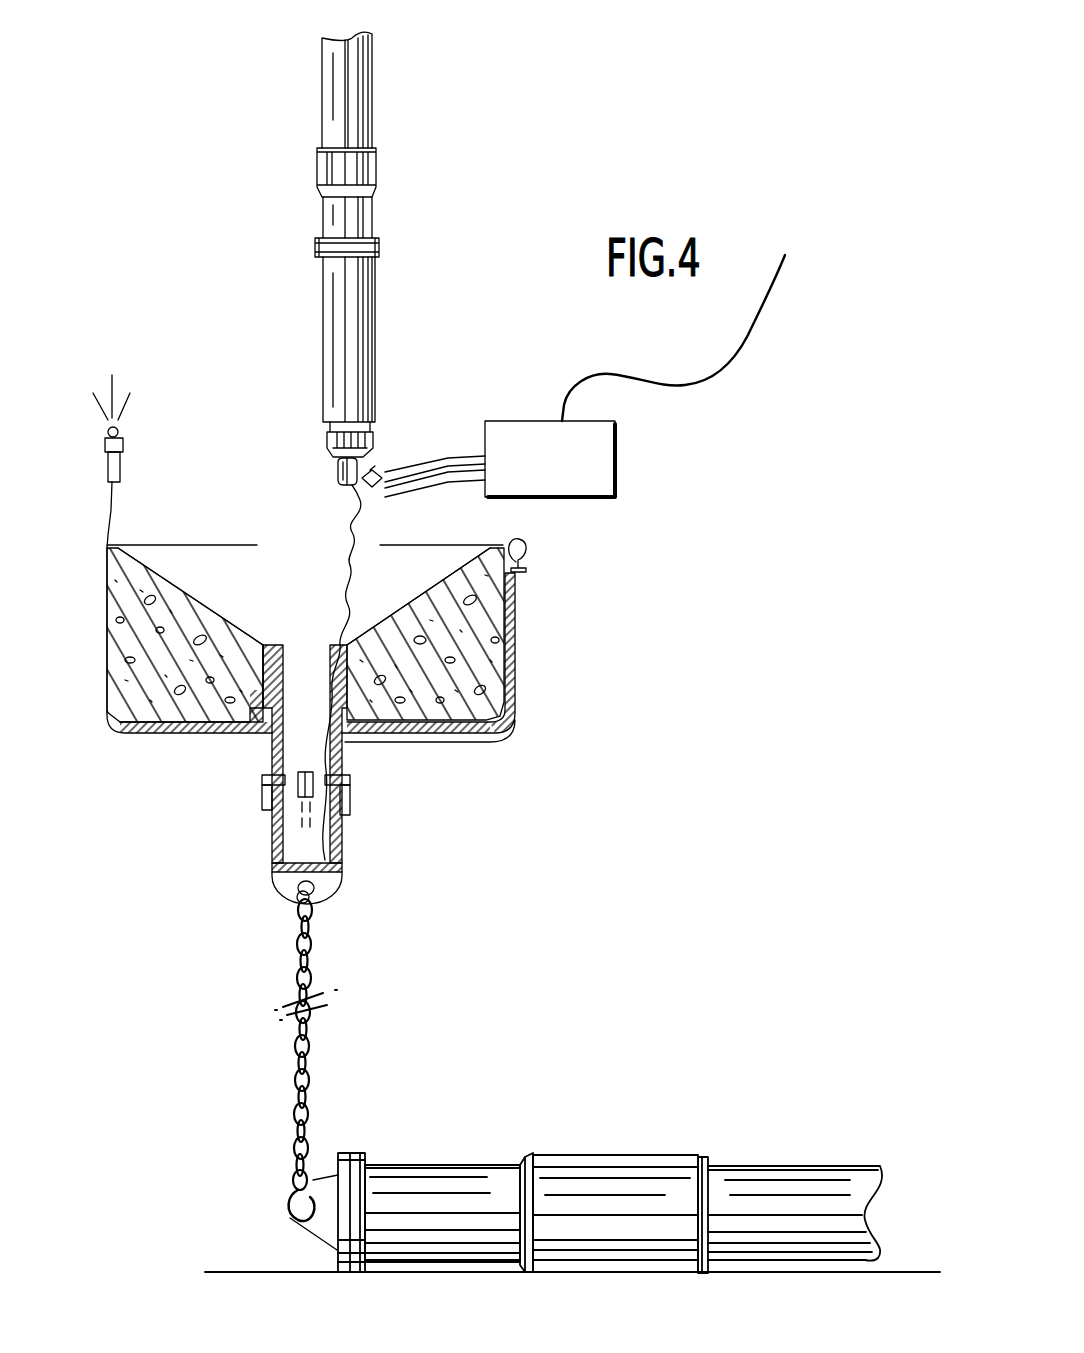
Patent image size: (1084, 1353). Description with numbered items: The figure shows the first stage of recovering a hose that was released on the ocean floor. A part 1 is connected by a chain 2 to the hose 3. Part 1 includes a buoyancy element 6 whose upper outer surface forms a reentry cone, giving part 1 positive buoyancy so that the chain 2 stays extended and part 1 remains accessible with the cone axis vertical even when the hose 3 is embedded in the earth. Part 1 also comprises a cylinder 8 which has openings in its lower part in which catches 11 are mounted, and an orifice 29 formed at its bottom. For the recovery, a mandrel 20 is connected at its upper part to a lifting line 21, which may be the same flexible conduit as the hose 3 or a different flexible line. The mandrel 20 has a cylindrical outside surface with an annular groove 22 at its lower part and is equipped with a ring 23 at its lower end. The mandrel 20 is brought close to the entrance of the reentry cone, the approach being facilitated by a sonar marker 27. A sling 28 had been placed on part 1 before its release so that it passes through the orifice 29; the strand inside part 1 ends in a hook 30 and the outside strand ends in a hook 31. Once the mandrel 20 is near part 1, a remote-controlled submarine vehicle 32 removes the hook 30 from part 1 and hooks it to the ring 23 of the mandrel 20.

The part 1 is at (351, 726).
The chain 2 is at (296, 1075).
The hose 3 is at (733, 1200).
The buoyancy element 6 is at (162, 735).
The cylinder 8 is at (338, 838).
The catches 11 is at (262, 786).
The mandrel 20 is at (353, 320).
The lifting line 21 is at (335, 120).
The annular groove 22 is at (372, 430).
The ring 23 is at (340, 472).
The sonar marker 27 is at (115, 468).
The sling 28 is at (350, 592).
The orifice 29 is at (312, 850).
The hook 30 is at (350, 515).
The hook 31 is at (532, 548).
The remote-controlled submarine vehicle 32 is at (617, 474).